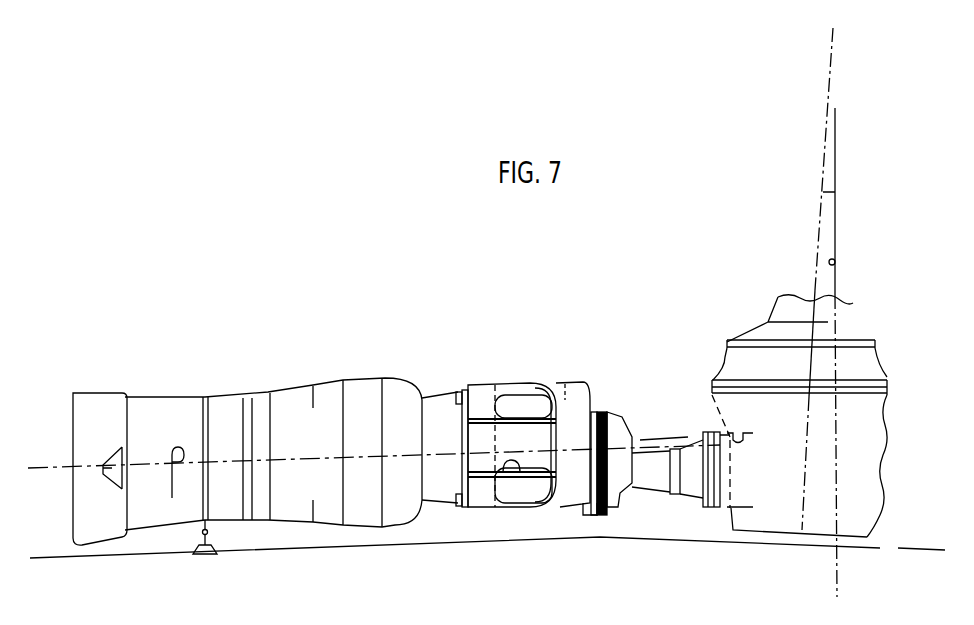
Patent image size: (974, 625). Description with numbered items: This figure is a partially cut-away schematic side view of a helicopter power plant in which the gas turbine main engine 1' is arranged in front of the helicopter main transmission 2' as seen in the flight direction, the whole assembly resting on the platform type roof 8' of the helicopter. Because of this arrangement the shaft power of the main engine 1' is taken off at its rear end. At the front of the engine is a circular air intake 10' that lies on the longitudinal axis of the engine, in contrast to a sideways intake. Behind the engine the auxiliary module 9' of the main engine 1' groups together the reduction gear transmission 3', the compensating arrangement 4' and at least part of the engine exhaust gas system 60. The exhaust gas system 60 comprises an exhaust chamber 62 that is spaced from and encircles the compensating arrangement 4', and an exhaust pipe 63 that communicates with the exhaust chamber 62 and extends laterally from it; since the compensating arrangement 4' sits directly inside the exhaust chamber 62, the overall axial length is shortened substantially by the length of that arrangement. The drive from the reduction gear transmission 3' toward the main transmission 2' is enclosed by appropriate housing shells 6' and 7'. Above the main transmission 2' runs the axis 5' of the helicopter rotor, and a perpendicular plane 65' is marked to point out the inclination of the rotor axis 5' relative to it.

The main engine 1' is at (273, 420).
The circular air intake 10' is at (105, 455).
The platform type roof 8' is at (282, 556).
The engine exhaust gas system 60 is at (526, 376).
The exhaust chamber 62 is at (477, 408).
The exhaust pipe 63 is at (563, 380).
The compensating arrangement 4' is at (494, 517).
The auxiliary module 9' is at (539, 490).
The reduction gear transmission 3' is at (597, 496).
The housing shell 6' is at (655, 497).
The housing shell 7' is at (720, 506).
The helicopter main transmission 2' is at (799, 449).
The axis of the helicopter rotor 5' is at (854, 312).
The perpendicular plane 65' is at (874, 259).